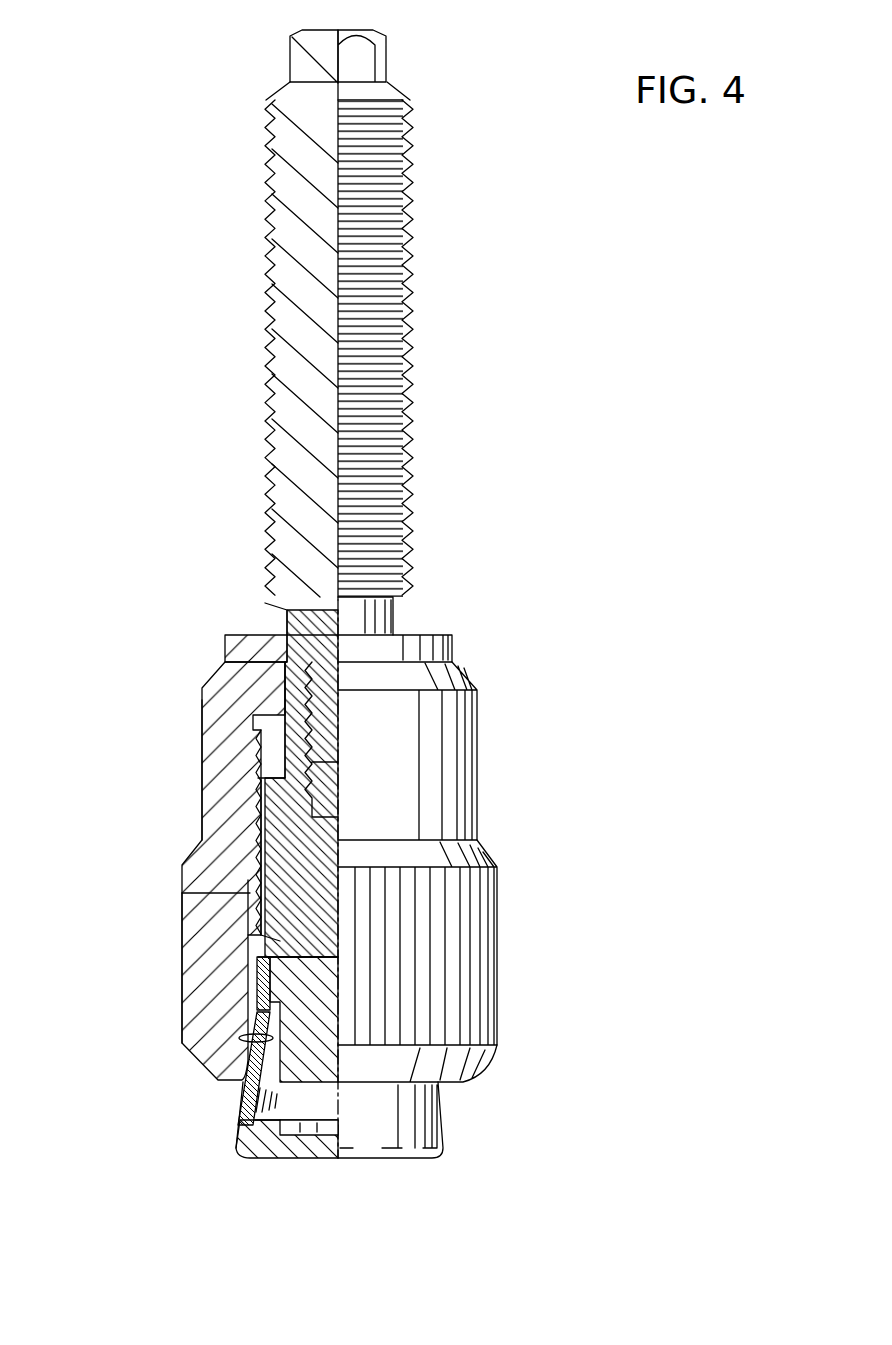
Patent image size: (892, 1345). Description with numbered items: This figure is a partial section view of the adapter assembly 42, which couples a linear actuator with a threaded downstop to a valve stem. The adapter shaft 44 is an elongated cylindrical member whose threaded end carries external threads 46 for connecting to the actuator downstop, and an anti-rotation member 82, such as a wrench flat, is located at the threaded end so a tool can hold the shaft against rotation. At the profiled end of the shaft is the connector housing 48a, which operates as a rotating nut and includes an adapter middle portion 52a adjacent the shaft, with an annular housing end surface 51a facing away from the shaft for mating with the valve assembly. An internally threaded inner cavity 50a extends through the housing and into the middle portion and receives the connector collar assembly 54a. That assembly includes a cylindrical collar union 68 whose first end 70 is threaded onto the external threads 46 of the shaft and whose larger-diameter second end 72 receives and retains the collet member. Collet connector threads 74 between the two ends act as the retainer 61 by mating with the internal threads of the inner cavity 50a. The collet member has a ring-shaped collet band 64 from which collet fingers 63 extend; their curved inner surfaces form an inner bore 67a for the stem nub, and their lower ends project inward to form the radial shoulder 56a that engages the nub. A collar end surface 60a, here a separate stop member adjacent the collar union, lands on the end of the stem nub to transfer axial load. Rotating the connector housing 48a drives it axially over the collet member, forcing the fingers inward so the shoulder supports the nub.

The adapter assembly 42 is at (528, 478).
The adapter shaft 44 is at (360, 492).
The external threads 46 is at (268, 512).
The connector housing 48a is at (295, 974).
The inner cavity 50a is at (257, 895).
The housing end surface 51a is at (450, 1082).
The adapter middle portion 52a is at (225, 692).
The connector collar assembly 54a is at (406, 1165).
The radial shoulder 56a is at (297, 1118).
The collar end surface 60a is at (315, 1085).
The retainer 61 is at (240, 810).
The collet fingers 63 is at (247, 1095).
The collet band 64 is at (270, 973).
The inner bore 67a is at (272, 1038).
The collar union 68 is at (300, 845).
The first end 70 is at (250, 653).
The second end 72 is at (257, 997).
The collet connector threads 74 is at (285, 782).
The anti-rotation member 82 is at (355, 61).